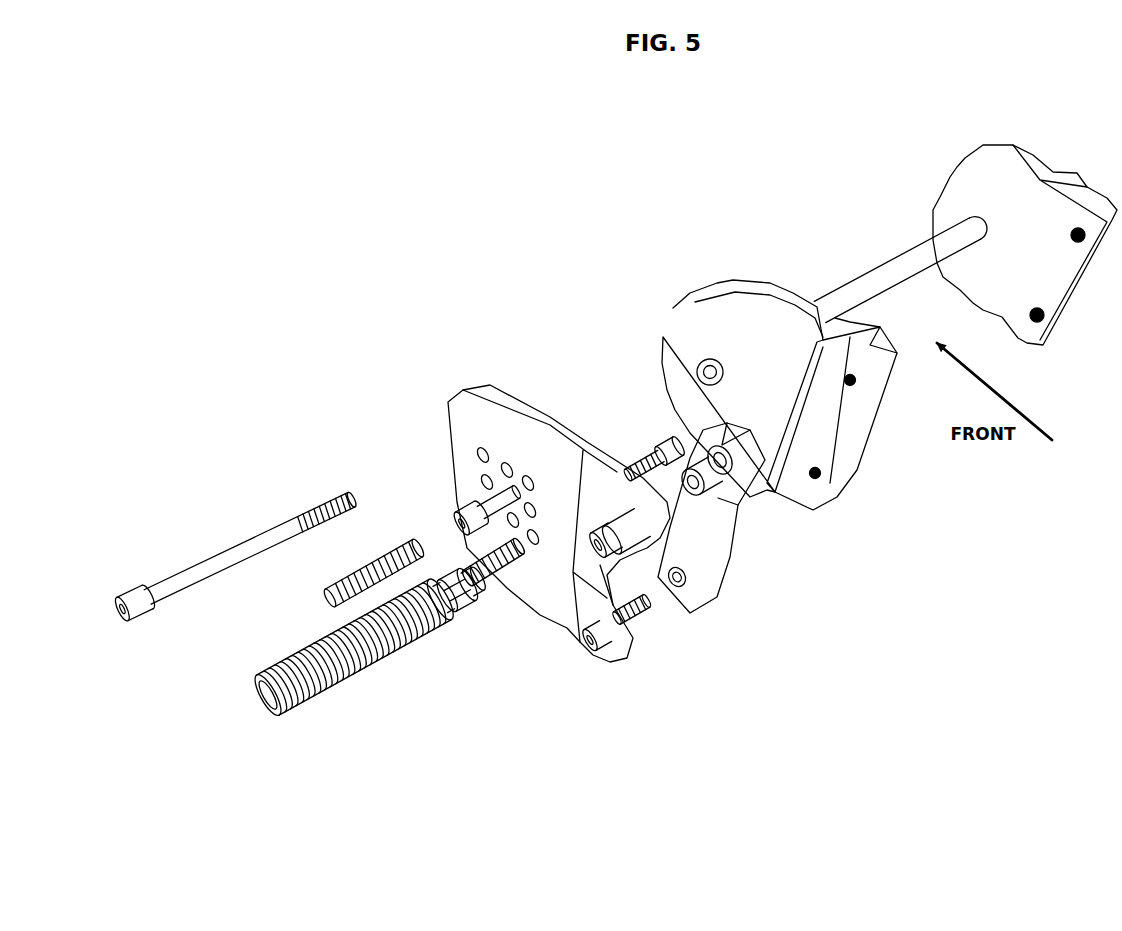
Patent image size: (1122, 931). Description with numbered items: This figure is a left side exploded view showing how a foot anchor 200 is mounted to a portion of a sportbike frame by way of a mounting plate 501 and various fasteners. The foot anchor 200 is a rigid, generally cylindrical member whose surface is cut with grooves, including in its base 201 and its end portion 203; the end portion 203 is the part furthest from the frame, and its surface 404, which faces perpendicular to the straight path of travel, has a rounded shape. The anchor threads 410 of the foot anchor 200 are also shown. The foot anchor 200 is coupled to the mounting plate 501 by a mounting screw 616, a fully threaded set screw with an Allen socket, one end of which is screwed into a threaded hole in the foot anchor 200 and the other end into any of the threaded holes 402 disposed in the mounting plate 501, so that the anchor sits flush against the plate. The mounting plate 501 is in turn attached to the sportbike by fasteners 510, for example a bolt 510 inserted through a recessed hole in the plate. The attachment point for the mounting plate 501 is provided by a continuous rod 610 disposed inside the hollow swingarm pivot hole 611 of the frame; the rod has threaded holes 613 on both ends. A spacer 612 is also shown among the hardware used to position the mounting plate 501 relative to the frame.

The foot anchor 200 is at (336, 718).
The base 201 is at (455, 612).
The end portion 203 is at (320, 707).
The threaded holes 402 is at (481, 452).
The surface 404 is at (265, 690).
The threads 410 is at (356, 672).
The mounting plate 501 is at (462, 472).
The fasteners 510 is at (509, 510).
The continuous rod 610 is at (883, 262).
The swingarm pivot hole 611 is at (690, 375).
The pin 612 is at (407, 532).
The threaded holes 613 is at (718, 376).
The mounting screw 616 is at (283, 522).